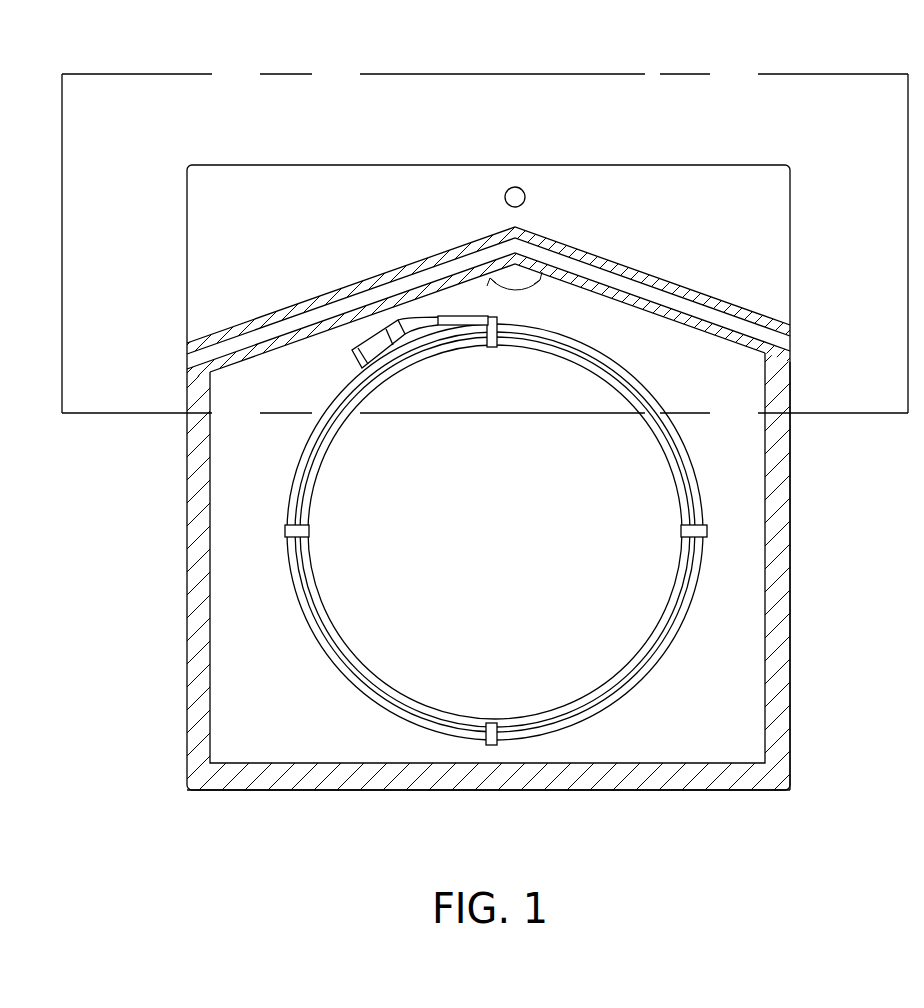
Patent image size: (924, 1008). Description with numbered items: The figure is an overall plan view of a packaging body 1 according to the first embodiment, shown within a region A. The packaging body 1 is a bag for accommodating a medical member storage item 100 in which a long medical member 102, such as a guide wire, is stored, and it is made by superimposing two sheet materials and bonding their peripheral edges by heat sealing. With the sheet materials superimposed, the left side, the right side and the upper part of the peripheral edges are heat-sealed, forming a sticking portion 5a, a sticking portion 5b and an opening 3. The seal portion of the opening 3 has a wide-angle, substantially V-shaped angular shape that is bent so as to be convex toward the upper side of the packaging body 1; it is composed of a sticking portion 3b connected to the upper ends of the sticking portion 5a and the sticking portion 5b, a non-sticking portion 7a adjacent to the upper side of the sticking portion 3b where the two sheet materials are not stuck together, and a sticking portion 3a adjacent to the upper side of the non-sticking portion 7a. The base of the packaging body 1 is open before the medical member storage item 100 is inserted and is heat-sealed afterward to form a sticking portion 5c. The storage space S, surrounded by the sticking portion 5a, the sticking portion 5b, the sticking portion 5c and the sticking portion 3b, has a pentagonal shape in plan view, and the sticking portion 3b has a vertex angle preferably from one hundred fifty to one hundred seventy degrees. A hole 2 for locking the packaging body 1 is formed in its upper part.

The region A is at (118, 108).
The packaging body 1 is at (797, 178).
The hole 2 is at (515, 197).
The opening 3 is at (488, 288).
The sticking portion 3a is at (488, 278).
The sticking portion 3b is at (602, 290).
The non-sticking portion 7a is at (556, 259).
The sticking portion 5a is at (206, 580).
The sticking portion 5b is at (792, 548).
The sticking portion 5c is at (498, 770).
The storage space S is at (713, 707).
The medical member storage item 100 is at (662, 392).
The medical member 102 is at (377, 347).